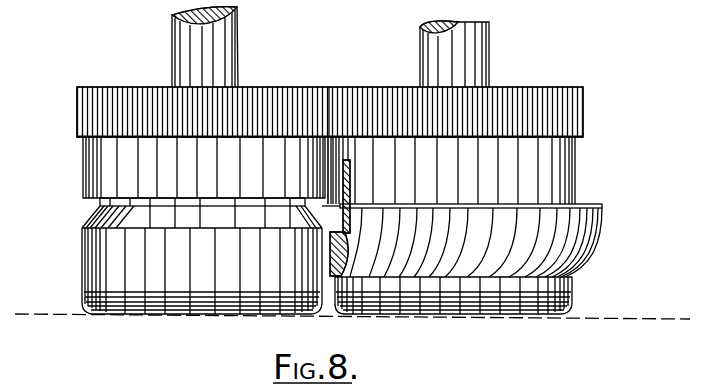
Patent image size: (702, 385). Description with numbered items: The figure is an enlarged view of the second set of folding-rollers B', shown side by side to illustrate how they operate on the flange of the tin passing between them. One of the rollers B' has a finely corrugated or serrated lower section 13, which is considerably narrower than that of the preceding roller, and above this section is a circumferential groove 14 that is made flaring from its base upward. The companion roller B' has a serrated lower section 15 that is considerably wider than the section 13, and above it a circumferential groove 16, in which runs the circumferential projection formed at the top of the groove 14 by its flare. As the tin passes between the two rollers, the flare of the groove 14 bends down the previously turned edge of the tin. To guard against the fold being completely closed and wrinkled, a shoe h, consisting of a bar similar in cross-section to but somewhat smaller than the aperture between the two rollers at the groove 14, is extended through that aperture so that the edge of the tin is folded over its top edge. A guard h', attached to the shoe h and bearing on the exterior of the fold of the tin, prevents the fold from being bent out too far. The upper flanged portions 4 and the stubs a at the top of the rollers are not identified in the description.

The flange ring 4 is at (77, 113).
The filling stub / neck a is at (229, 47).
The folding-rollers B' is at (329, 209).
The circumferential groove 16 is at (191, 213).
The serrated lower section 15 is at (202, 271).
The guard h' is at (359, 196).
The shoe h is at (347, 254).
The circumferential groove 14 is at (462, 240).
The serrated lower section 13 is at (453, 295).